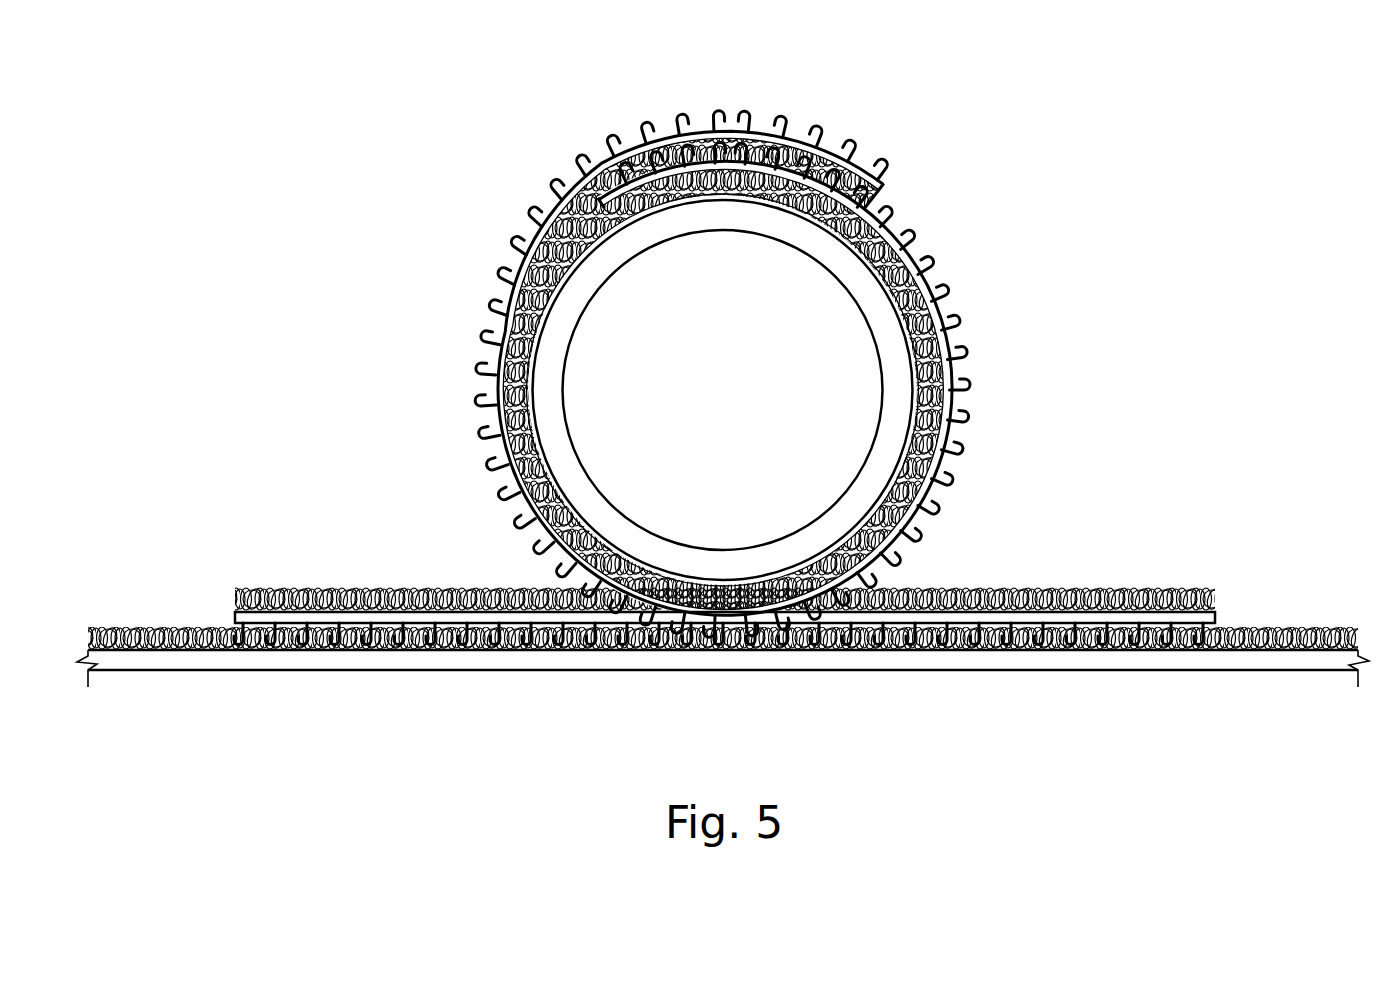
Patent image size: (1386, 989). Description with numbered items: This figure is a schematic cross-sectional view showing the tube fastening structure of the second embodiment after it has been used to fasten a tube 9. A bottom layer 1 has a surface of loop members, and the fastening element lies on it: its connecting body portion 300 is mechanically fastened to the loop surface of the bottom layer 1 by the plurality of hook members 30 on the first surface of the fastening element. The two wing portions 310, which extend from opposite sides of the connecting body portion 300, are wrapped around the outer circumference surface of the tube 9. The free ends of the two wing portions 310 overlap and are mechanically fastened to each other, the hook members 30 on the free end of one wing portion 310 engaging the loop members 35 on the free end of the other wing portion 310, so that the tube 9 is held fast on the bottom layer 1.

The bottom layer 1 is at (123, 660).
The tube 9 is at (888, 322).
The hook members 30 is at (872, 148).
The loop members 35 is at (733, 143).
The connecting body portion 300 is at (338, 590).
The wing portions 310 is at (598, 187).